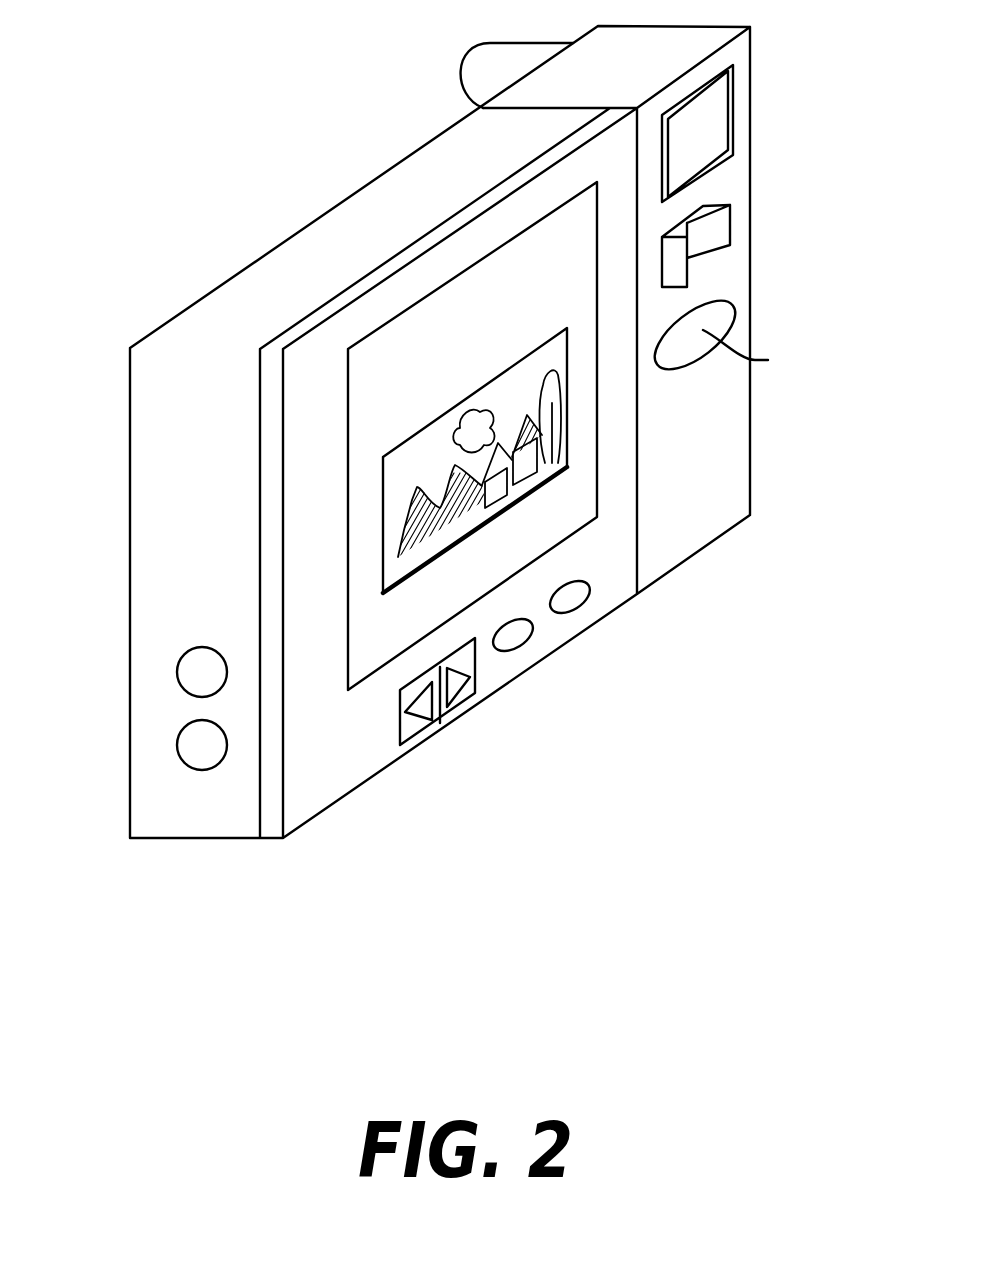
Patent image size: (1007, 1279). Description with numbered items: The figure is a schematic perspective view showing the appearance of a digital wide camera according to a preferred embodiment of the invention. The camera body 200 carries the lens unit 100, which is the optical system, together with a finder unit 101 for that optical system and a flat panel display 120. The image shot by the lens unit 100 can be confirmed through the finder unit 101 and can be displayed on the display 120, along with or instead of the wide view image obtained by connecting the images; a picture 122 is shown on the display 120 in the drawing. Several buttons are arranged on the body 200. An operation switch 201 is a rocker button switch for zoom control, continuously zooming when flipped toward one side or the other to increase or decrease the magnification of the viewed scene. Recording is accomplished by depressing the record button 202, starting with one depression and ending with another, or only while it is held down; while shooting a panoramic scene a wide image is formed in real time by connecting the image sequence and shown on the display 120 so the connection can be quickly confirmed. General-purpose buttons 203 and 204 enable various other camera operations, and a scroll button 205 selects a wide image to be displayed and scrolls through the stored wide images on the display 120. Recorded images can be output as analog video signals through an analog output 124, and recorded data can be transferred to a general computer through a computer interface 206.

The lens unit 100 is at (478, 80).
The finder unit 101 is at (715, 132).
The flat panel display 120 is at (597, 467).
The displayed image 122 is at (567, 397).
The analog output 124 is at (177, 672).
The camera body 200 is at (175, 316).
The operation switch 201 is at (713, 235).
The record button 202 is at (735, 310).
The general-purpose button 203 is at (583, 600).
The general-purpose button 204 is at (527, 638).
The scroll button 205 is at (440, 703).
The computer interface 206 is at (177, 746).